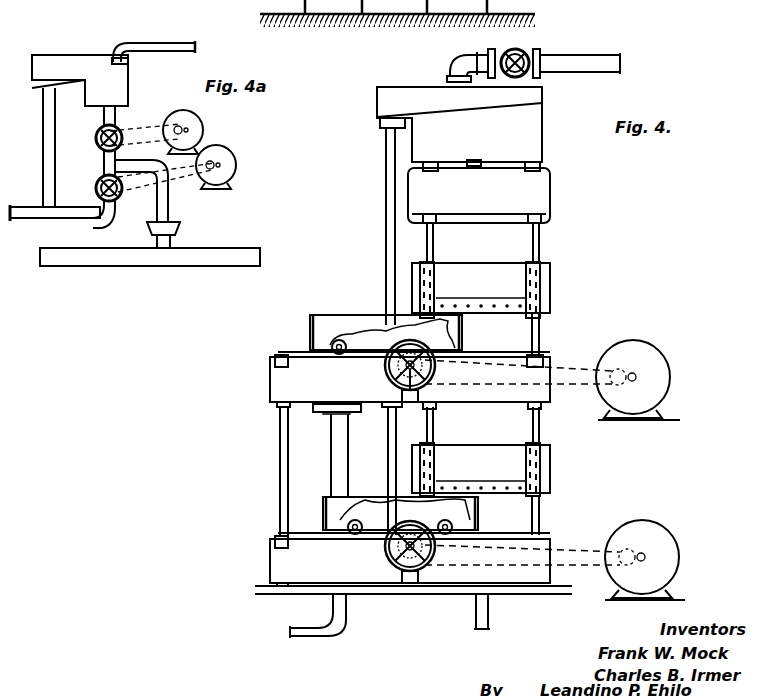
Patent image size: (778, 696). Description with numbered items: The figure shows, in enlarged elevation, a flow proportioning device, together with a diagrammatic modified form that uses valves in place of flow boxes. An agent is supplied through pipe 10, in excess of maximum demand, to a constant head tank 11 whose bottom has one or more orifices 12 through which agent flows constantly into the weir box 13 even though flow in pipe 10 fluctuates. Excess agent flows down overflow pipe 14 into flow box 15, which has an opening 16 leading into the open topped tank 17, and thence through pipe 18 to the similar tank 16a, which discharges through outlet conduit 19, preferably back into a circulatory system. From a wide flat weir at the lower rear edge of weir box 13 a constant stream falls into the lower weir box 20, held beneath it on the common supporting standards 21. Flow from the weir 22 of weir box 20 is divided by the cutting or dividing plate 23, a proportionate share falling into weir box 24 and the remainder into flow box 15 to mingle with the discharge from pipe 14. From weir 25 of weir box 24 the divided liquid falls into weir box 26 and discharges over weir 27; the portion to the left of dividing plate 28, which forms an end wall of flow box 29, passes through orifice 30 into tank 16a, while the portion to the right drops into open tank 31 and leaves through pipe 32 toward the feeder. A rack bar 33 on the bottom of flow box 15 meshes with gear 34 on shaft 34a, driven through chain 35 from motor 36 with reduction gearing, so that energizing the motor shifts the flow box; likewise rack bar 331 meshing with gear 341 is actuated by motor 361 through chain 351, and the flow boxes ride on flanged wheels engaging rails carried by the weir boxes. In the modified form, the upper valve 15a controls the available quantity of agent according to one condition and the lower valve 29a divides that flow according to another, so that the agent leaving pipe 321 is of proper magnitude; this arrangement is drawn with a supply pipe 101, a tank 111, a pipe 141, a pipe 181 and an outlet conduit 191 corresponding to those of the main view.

In FIG. 4, the supply pipe 10 is at (584, 62).
In FIG. 4, the constant head tank 11 is at (530, 106).
In FIG. 4, the orifice 12 is at (482, 160).
In FIG. 4, the weir box 13 is at (545, 200).
In FIG. 4, the overflow pipe 14 is at (385, 212).
In FIG. 4, the flow box 15 is at (325, 325).
In FIG. 4, the opening 16 is at (300, 367).
In FIG. 4, the open topped tank 17 is at (292, 398).
In FIG. 4, the pipe 18 is at (335, 451).
In FIG. 4, the outlet conduit 19 is at (320, 639).
In FIG. 4, the lower weir box 20 is at (552, 283).
In FIG. 4, the supporting standards 21 is at (434, 246).
In FIG. 4, the weir 22 is at (540, 329).
In FIG. 4, the cutting or dividing plate 23 is at (460, 341).
In FIG. 4, the weir box 24 is at (543, 413).
In FIG. 4, the weir 25 is at (505, 408).
In FIG. 4, the weir box 26 is at (545, 473).
In FIG. 4, the weir 27 is at (532, 497).
In FIG. 4, the cutting or dividing plate 28 is at (478, 515).
In FIG. 4, the flow box 29 is at (365, 497).
In FIG. 4, the orifice 30 is at (345, 539).
In FIG. 4, the open tank 31 is at (546, 596).
In FIG. 4, the pipe 32 is at (492, 626).
In FIG. 4, the rack bar 33 is at (345, 352).
In FIG. 4, the gear 34 is at (432, 371).
In FIG. 4, the shaft 34a is at (420, 388).
In FIG. 4, the chain 35 is at (576, 366).
In FIG. 4A, the motor 36 is at (200, 126).
In FIG. 4, the motor 36 is at (662, 358).
In FIG. 4A, the supply pipe 101 is at (172, 42).
In FIG. 4A, the tank 111 is at (122, 91).
In FIG. 4A, the valve pipe 141 is at (45, 140).
In FIG. 4A, the upper valve 15a is at (124, 130).
In FIG. 4A, the valve pipe 181 is at (103, 164).
In FIG. 4A, the drain pipe 191 is at (20, 206).
In FIG. 4A, the pipe 321 is at (168, 200).
In FIG. 4A, the motor 361 is at (236, 170).
In FIG. 4, the motor 361 is at (667, 532).
In FIG. 4, the rack bar 331 is at (358, 534).
In FIG. 4, the gear 341 is at (432, 553).
In FIG. 4, the chain 351 is at (589, 546).
In FIG. 4A, the lower valve 29a is at (104, 222).
In FIG. 4, the similar tank 16a is at (278, 581).